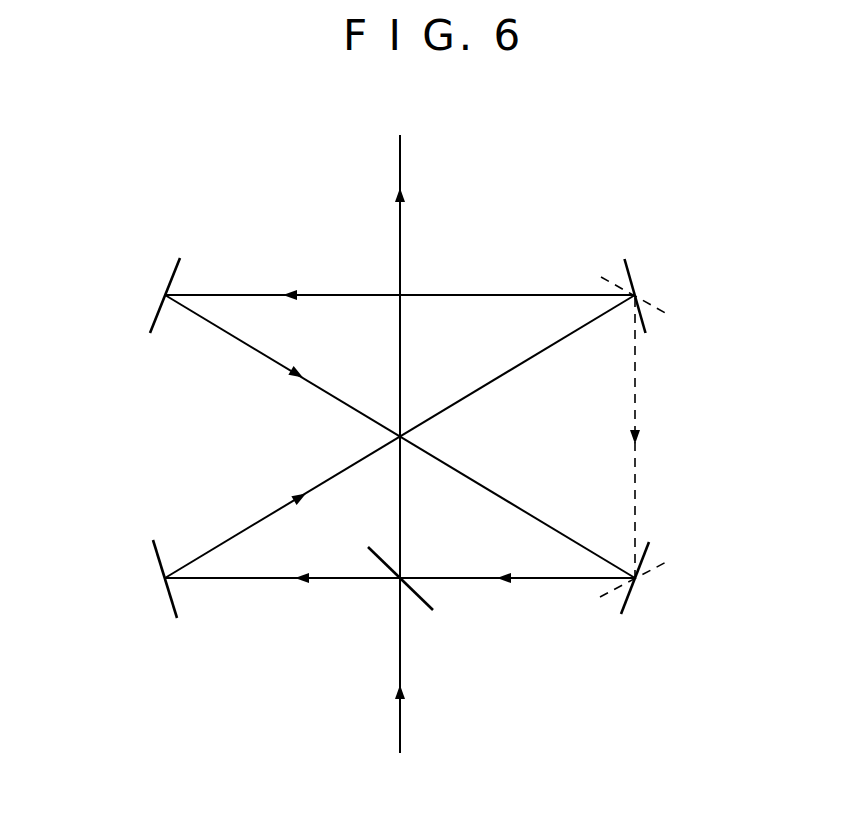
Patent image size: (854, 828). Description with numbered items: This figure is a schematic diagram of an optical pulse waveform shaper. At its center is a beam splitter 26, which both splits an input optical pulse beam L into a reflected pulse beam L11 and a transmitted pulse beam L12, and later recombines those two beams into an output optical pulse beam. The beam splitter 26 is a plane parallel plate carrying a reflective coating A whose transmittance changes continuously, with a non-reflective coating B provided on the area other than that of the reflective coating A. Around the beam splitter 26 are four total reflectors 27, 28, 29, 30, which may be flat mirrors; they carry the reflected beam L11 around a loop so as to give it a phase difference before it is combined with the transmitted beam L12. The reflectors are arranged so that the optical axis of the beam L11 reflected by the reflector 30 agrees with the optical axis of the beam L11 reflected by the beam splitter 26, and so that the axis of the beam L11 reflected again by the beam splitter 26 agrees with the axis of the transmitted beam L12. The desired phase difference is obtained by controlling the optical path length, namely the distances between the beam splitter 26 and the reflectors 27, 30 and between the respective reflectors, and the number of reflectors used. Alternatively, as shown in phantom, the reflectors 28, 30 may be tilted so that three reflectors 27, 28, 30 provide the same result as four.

The beam splitter 26 is at (427, 597).
The total reflector 27 is at (162, 592).
The total reflector 28 is at (648, 335).
The total reflector 29 is at (160, 287).
The total reflector 30 is at (649, 550).
The reflective coating A is at (387, 568).
The non-reflective coating B is at (372, 553).
The input optical pulse beam L is at (401, 717).
The reflected pulse beam L11 is at (323, 580).
The transmitted pulse beam L12 is at (402, 487).